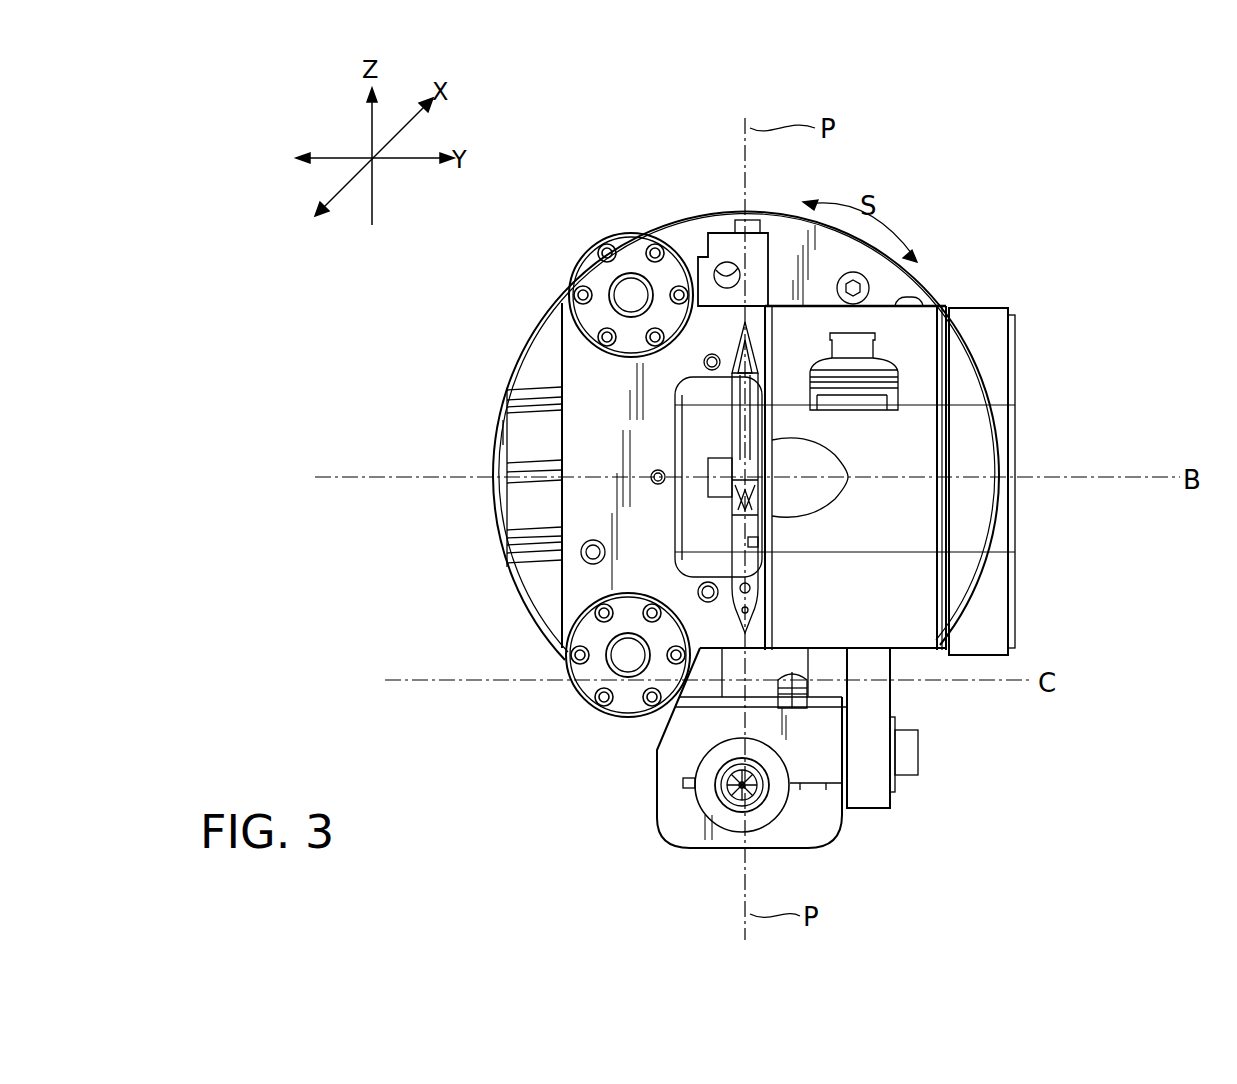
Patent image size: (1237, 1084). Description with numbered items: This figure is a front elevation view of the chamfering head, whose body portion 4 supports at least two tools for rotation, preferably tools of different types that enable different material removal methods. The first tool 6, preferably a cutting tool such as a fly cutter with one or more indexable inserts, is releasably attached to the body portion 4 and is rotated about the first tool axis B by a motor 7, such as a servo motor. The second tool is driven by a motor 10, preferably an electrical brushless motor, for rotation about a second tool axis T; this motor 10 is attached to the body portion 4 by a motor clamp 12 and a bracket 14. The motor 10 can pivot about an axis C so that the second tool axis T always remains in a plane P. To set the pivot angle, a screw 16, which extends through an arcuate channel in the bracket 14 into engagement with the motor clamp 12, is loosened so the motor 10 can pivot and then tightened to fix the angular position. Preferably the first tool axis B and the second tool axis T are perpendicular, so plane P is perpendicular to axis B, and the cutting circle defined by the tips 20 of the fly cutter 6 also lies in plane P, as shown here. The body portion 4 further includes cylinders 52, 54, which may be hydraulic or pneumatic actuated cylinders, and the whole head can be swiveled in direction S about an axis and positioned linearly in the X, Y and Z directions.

The body portion 4 is at (578, 378).
The first tool 6 is at (737, 437).
The motor 7 is at (524, 511).
The motor 10 is at (703, 768).
The motor clamp 12 is at (807, 827).
The bracket 14 is at (880, 707).
The screw 16 is at (912, 758).
The tips 20 is at (750, 322).
The cylinder 52 is at (588, 272).
The cylinder 54 is at (586, 631).